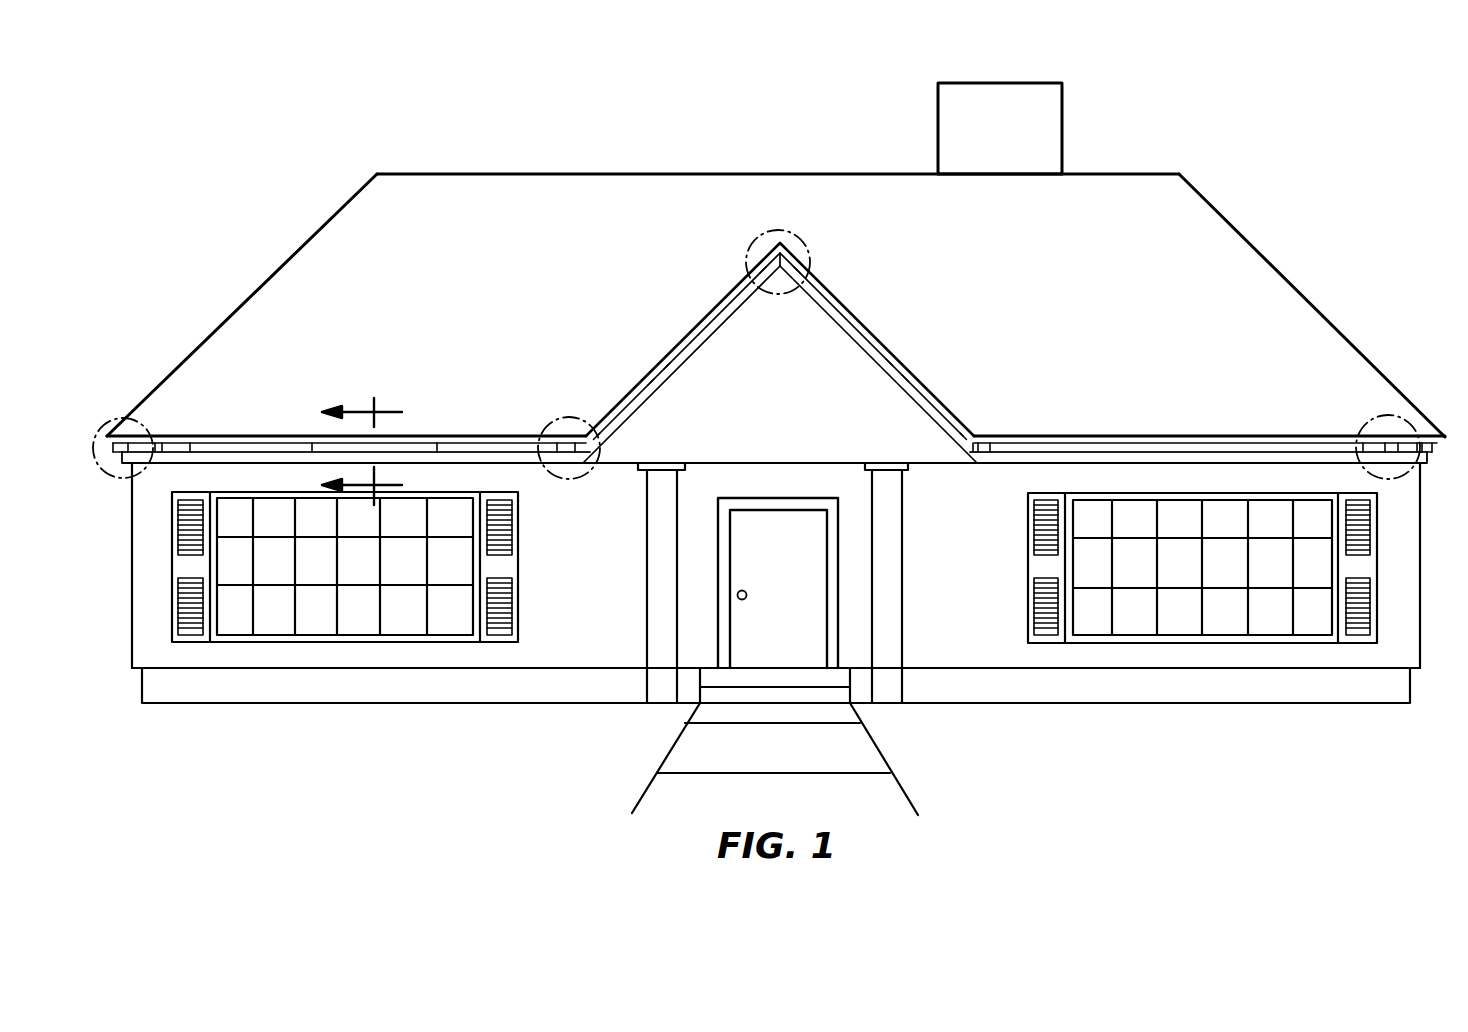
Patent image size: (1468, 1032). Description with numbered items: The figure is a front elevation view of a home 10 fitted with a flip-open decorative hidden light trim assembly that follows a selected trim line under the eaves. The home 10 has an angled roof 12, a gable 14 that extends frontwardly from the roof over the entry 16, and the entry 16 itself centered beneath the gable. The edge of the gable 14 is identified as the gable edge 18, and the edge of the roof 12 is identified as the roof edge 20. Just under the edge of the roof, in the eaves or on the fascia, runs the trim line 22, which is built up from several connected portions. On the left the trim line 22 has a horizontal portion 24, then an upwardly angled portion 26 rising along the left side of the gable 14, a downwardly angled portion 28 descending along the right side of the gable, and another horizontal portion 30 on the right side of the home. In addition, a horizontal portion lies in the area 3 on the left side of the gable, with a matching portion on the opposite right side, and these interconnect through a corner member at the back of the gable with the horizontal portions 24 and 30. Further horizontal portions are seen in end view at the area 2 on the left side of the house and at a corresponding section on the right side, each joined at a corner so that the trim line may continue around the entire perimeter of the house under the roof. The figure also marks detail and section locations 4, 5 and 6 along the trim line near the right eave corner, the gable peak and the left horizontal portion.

The home 10 is at (466, 136).
The roof 12 is at (1087, 290).
The gable 14 is at (790, 362).
The entry 16 is at (789, 578).
The edge of gable 18 is at (866, 326).
The edge of roof 20 is at (237, 434).
The trim line 22 is at (508, 462).
The horizontal portion 24 is at (265, 457).
The upwardly angled portion 26 is at (665, 384).
The downwardly angled portion 28 is at (897, 383).
The horizontal portion 30 is at (1281, 456).
The area 2 is at (124, 418).
The area 3 is at (566, 417).
The detail view area 4 is at (1370, 417).
The detail view area 5 is at (808, 235).
The section line 6 is at (362, 445).